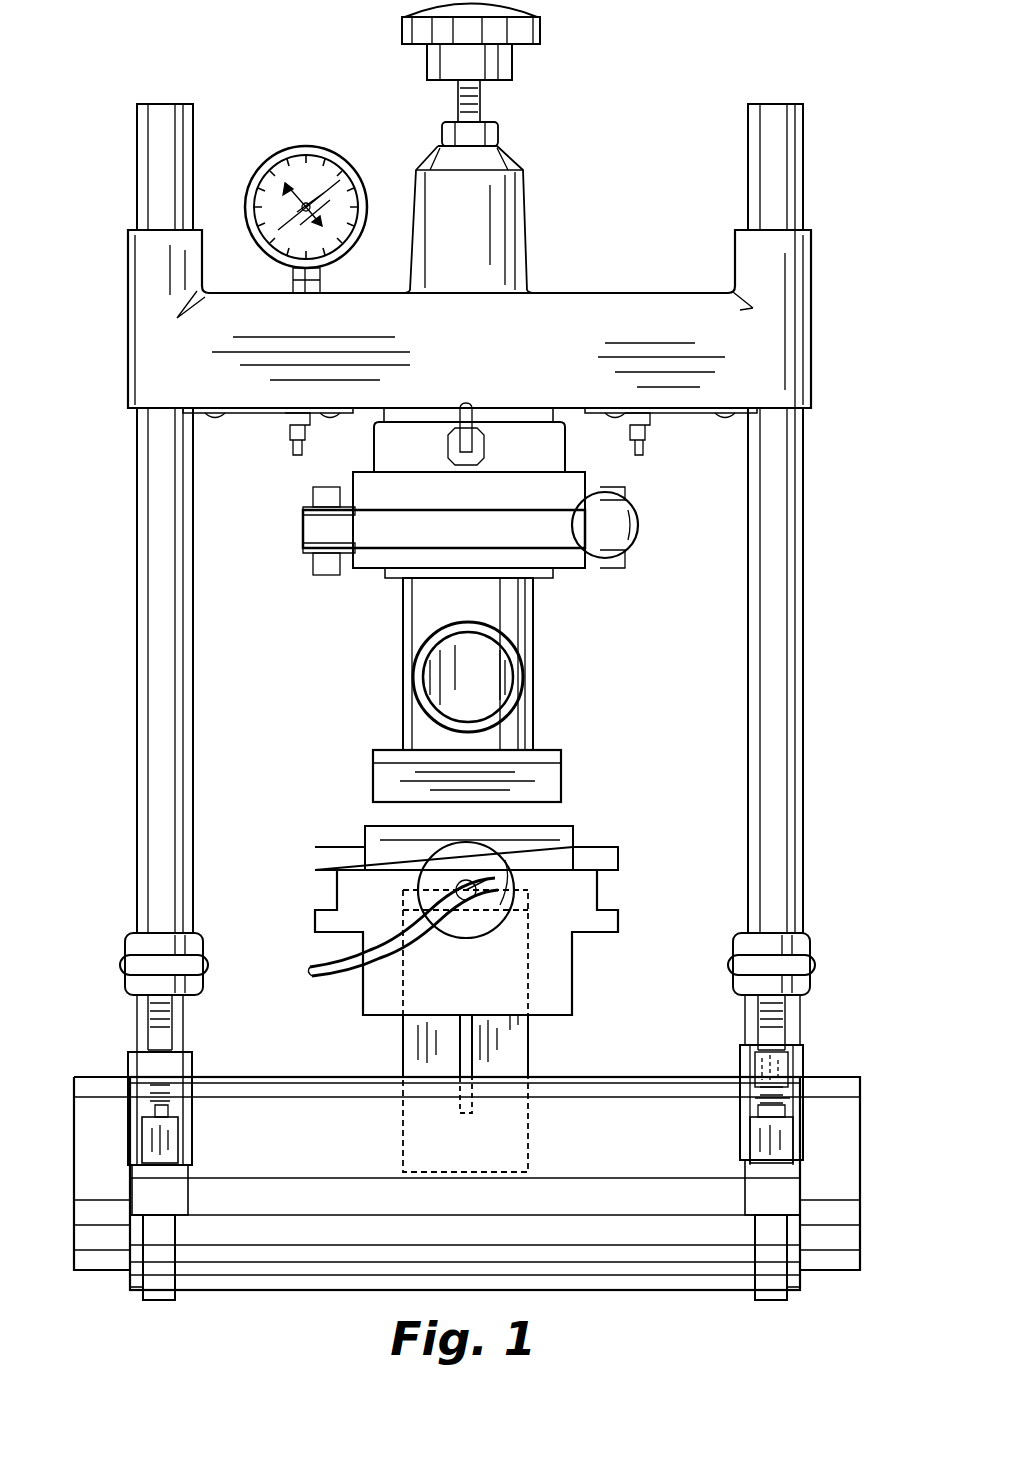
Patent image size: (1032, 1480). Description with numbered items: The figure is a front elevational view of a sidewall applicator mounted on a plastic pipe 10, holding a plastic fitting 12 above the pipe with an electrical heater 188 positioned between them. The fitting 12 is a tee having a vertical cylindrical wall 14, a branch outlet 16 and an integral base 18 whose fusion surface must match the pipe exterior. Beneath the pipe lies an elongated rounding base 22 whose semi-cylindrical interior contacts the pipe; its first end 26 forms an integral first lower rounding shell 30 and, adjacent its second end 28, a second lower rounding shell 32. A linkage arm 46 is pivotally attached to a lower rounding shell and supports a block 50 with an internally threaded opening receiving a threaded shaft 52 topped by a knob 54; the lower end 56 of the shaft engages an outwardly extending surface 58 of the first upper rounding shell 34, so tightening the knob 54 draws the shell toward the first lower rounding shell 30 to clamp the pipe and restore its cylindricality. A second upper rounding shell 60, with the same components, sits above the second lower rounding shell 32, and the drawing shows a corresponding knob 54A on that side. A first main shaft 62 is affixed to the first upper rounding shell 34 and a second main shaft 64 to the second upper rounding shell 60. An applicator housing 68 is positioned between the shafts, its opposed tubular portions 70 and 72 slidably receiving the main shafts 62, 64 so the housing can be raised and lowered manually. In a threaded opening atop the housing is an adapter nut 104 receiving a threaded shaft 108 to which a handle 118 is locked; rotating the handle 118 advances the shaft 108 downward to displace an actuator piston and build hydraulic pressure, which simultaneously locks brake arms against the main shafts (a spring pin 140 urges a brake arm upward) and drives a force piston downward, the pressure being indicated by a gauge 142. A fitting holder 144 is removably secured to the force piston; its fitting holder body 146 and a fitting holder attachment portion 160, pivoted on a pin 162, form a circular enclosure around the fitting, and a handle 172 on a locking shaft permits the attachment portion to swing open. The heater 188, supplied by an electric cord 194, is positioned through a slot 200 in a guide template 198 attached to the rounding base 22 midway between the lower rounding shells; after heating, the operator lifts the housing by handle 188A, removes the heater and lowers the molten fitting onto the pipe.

The plastic pipe 10 is at (467, 1177).
The plastic fitting 12 is at (448, 690).
The vertical cylindrical wall 14 is at (522, 622).
The branch outlet 16 is at (498, 705).
The integral base 18 is at (553, 780).
The rounding base 22 is at (575, 1255).
The first end 26 is at (800, 1225).
The second end 28 is at (128, 1255).
The first lower rounding shell 30 is at (762, 1262).
The second lower rounding shell 32 is at (165, 1283).
The first upper rounding shell 34 is at (737, 1058).
The linkage arm 46 is at (795, 1148).
The block 50 is at (783, 1057).
The threaded shaft 52 is at (777, 1006).
The knob 54 is at (795, 955).
The left collar 54A is at (150, 960).
The lower end 56 is at (780, 1108).
The outwardly extending surface 58 is at (758, 1098).
The second upper rounding shell 60 is at (195, 1055).
The first main shaft 62 is at (775, 633).
The second main shaft 64 is at (155, 760).
The applicator housing 68 is at (700, 306).
The tubular portion 70 is at (790, 290).
The tubular portion 72 is at (153, 270).
The adapter nut 104 is at (492, 135).
The threaded shaft 108 is at (482, 100).
The handle 118 is at (520, 22).
The spring pin 140 is at (647, 452).
The gauge 142 is at (297, 147).
The fitting holder 144 is at (396, 494).
The fitting holder body 146 is at (493, 492).
The fitting holder attachment portion 160 is at (395, 528).
The pin 162 is at (318, 491).
The handle 172 is at (612, 543).
The electrical heater 188 is at (479, 957).
The handle 188A is at (445, 858).
The electric cord 194 is at (335, 960).
The guide template 198 is at (395, 1047).
The slot 200 is at (468, 1045).